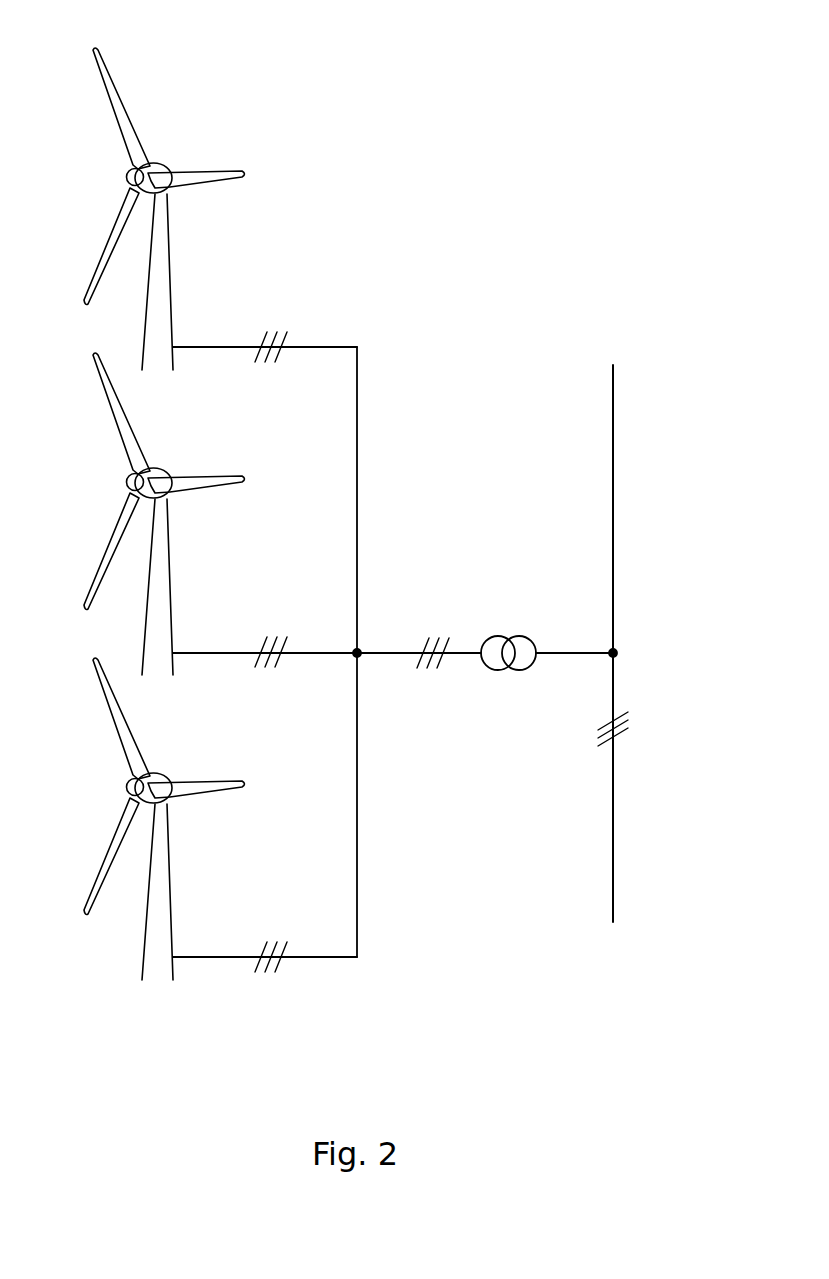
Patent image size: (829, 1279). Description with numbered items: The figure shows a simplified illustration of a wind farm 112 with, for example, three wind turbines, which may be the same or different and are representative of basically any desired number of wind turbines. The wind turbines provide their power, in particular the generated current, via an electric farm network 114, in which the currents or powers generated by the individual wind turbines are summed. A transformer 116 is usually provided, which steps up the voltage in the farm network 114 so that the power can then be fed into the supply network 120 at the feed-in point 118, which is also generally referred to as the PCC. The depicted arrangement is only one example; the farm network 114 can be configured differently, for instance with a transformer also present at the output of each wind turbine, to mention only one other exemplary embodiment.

The wind farm 112 is at (481, 296).
The electric farm network 114 is at (382, 653).
The transformer 116 is at (512, 622).
The feed-in point 118 is at (626, 628).
The supply network 120 is at (613, 427).